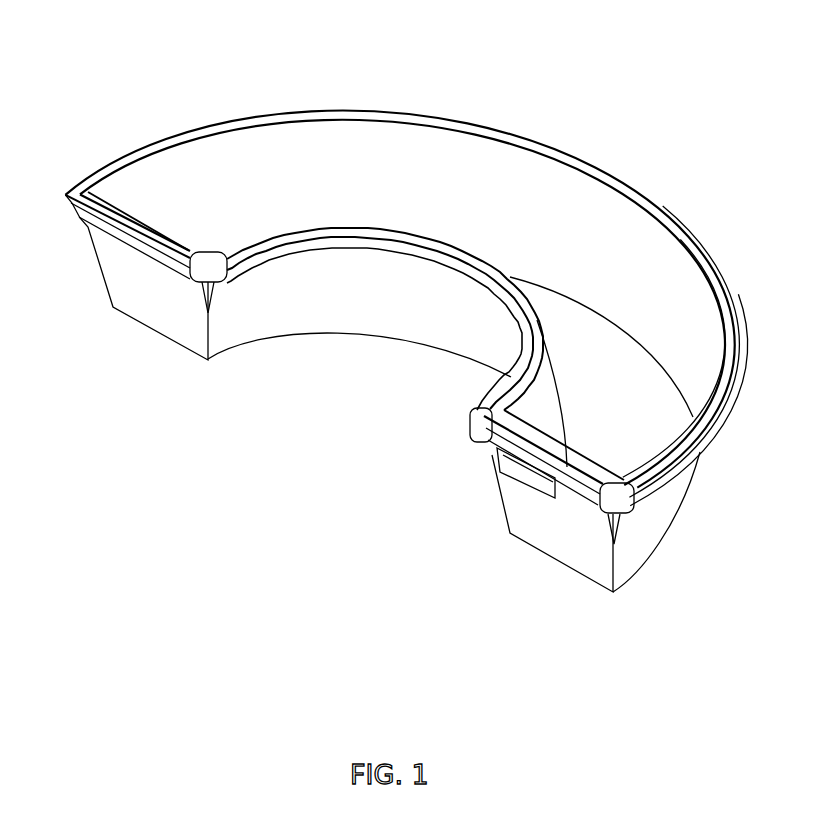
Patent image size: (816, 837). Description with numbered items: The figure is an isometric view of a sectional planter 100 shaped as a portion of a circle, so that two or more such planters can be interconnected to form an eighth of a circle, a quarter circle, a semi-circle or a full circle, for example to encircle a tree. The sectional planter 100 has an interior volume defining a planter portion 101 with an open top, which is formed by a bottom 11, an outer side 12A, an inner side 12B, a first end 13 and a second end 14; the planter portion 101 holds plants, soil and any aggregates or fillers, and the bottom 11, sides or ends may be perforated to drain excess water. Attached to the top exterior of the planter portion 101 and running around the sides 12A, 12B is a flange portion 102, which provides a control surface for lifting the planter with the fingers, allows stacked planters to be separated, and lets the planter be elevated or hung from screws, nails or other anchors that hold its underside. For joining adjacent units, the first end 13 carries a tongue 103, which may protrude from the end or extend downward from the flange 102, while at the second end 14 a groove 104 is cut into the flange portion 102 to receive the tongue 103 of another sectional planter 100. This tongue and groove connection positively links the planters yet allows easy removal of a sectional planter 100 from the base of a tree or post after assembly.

The sectional planter 100 is at (736, 97).
The planter portion 101 is at (577, 290).
The flange portion 102 is at (427, 244).
The tongue 103 is at (523, 476).
The groove 104 is at (123, 228).
The bottom 11 is at (565, 393).
The outer side 12A is at (406, 308).
The inner side 12B is at (359, 339).
The first end 13 is at (559, 514).
The second end 14 is at (125, 279).